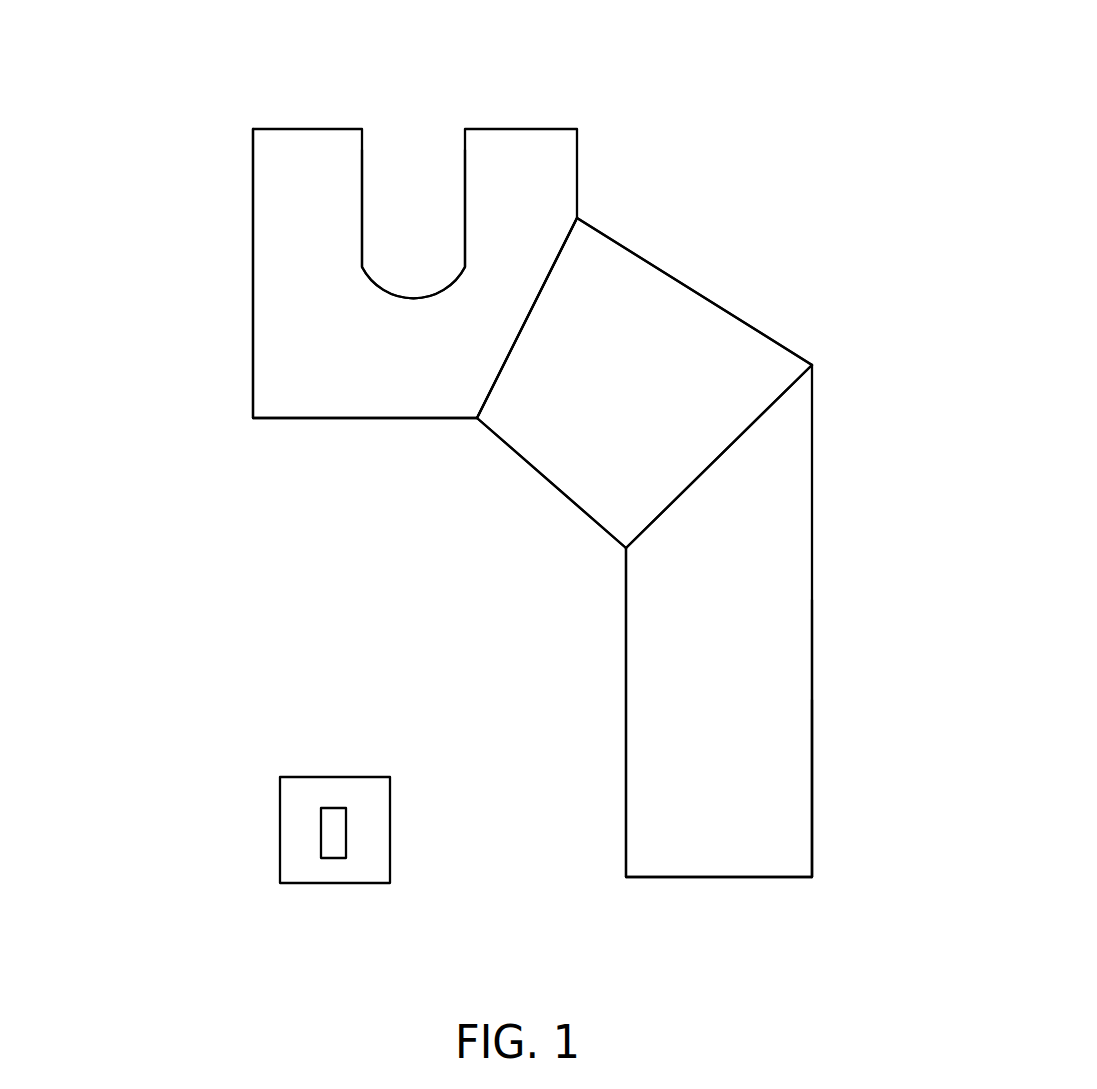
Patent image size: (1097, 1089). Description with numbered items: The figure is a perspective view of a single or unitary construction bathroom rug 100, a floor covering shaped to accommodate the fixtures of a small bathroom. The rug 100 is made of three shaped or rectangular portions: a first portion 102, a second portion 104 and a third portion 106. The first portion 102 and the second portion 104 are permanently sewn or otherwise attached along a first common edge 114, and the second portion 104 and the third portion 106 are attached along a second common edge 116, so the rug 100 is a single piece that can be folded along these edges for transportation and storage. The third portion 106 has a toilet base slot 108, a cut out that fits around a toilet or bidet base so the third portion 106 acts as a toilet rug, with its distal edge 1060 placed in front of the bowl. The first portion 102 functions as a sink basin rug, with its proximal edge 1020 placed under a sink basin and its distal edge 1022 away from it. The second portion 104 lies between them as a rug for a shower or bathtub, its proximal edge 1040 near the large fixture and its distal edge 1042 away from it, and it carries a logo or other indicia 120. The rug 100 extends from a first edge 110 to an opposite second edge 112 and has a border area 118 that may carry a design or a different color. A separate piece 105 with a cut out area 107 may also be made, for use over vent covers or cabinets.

The rug 100 is at (212, 242).
The first portion 102 is at (842, 631).
The second portion 104 is at (774, 297).
The piece 105 is at (288, 812).
The third portion 106 is at (628, 141).
The cut out area 107 is at (320, 858).
The toilet base slot 108 is at (380, 217).
The first edge 110 is at (723, 877).
The second edge 112 is at (273, 283).
The first common edge 114 is at (713, 442).
The second common edge 116 is at (510, 349).
The border area 118 is at (798, 750).
The logo or other indicia 120 is at (626, 407).
The proximal edge 1020 is at (798, 686).
The distal edge 1022 is at (622, 775).
The proximal edge 1040 is at (670, 273).
The distal edge 1042 is at (490, 440).
The distal edge 1060 is at (312, 418).